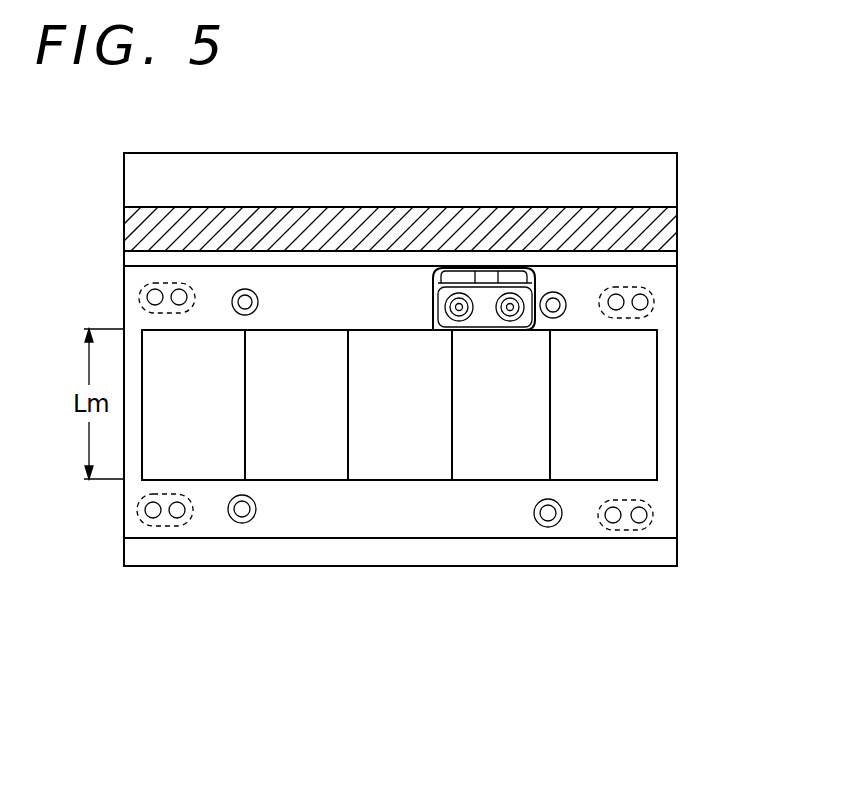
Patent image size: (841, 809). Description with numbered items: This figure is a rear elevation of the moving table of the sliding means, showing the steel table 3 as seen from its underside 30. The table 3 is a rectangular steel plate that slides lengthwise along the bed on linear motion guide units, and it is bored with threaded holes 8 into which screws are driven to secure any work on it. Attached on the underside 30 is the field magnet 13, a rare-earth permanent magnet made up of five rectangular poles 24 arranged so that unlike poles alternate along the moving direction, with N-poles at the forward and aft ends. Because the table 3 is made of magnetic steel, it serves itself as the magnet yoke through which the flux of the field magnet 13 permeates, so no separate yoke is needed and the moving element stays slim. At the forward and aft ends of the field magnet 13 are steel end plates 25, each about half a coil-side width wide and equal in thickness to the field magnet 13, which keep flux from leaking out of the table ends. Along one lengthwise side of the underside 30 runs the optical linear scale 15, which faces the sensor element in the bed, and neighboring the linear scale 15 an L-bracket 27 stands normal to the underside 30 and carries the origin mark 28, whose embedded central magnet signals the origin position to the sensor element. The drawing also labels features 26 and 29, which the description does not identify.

The table 3 is at (584, 560).
The threaded holes 8 is at (246, 289).
The field magnet 13 is at (492, 480).
The linear scale 15 is at (660, 232).
The rectangular poles 24 is at (207, 362).
The end plates 25 is at (668, 402).
The mounting holes 26 is at (179, 289).
The L-bracket 27 is at (433, 298).
The origin mark 28 is at (518, 279).
The magnetic sensor 29 is at (486, 280).
The underside 30 is at (372, 525).